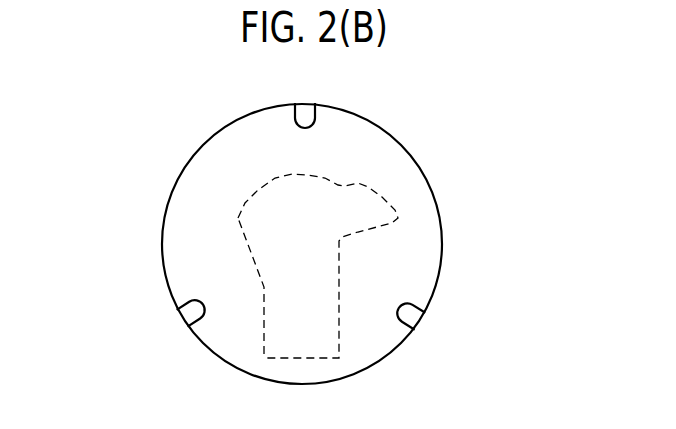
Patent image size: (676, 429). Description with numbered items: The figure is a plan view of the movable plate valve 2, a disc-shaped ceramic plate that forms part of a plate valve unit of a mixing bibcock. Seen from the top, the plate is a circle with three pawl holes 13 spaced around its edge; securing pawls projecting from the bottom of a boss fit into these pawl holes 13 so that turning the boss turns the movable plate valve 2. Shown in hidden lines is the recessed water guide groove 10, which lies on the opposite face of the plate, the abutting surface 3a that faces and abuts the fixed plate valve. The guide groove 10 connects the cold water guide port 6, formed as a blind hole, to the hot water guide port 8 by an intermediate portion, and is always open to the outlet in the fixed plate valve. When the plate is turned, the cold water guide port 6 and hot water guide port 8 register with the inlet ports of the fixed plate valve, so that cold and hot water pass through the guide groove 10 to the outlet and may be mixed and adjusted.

The movable plate valve 2 is at (381, 125).
The pawl holes 13 is at (305, 120).
The abutting surface 3a is at (393, 298).
The cold water guide port 6 is at (372, 208).
The recessed water guide groove 10 is at (300, 232).
The hot water guide port 8 is at (297, 352).